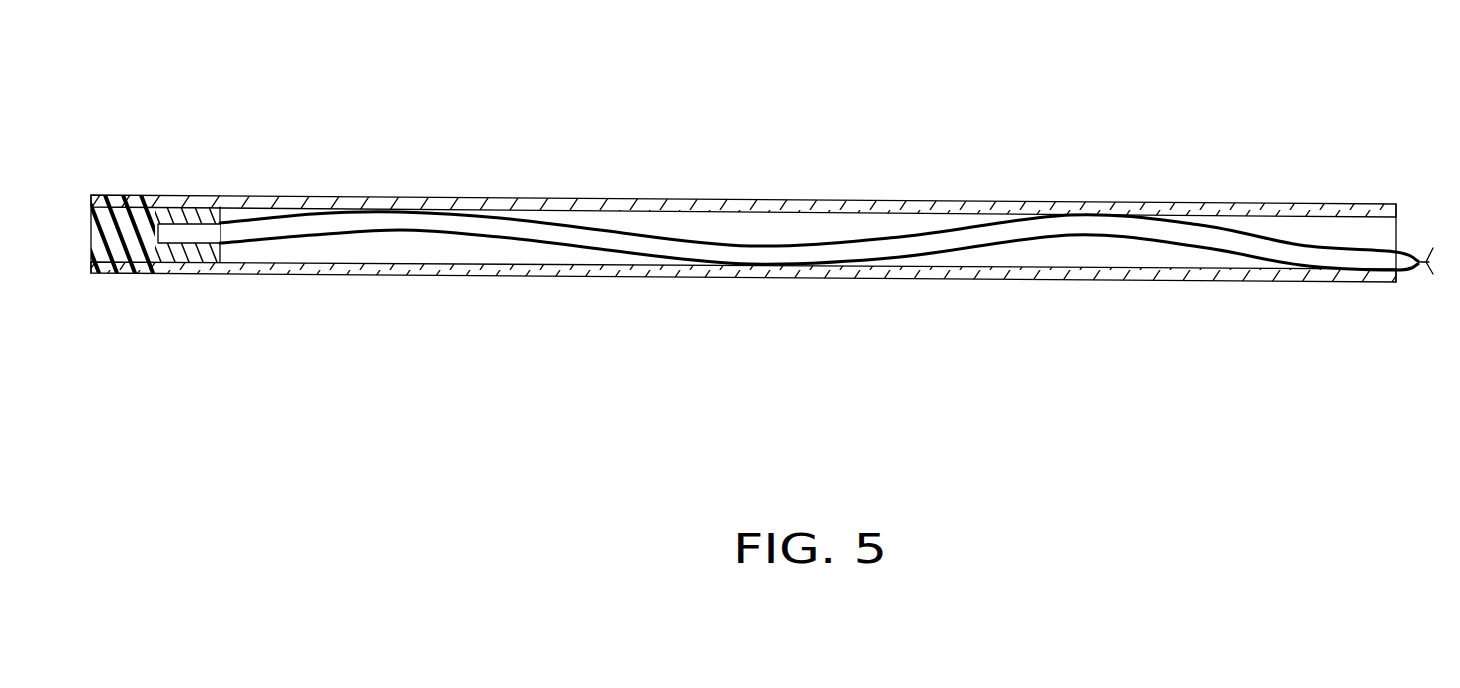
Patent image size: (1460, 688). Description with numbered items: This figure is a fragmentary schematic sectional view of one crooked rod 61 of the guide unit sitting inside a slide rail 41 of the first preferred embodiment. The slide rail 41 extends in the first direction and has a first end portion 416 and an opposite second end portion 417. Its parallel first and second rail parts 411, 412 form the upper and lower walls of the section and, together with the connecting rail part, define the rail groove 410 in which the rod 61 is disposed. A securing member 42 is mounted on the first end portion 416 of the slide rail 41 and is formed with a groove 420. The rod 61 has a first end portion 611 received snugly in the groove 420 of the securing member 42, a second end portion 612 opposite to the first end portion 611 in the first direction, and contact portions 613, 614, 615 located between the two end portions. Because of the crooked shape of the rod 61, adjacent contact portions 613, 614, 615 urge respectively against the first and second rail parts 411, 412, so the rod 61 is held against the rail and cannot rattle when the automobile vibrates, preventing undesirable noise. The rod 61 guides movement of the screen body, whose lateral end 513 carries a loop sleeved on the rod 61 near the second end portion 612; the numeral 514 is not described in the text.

The slide rail 41 is at (743, 214).
The rail groove 410 is at (1103, 244).
The first rail part 411 is at (579, 199).
The second rail part 412 is at (478, 274).
The first end portion 416 is at (247, 201).
The second end portion 417 is at (1357, 204).
The securing member 42 is at (132, 196).
The groove 420 is at (193, 222).
The crooked rod 61 is at (797, 255).
The first end portion 611 is at (179, 240).
The second end portion 612 is at (1363, 263).
The contact portion 613 is at (743, 253).
The contact portion 614 is at (418, 212).
The contact portion 615 is at (1055, 226).
The lateral end 513 is at (1422, 232).
The tube section 514 is at (1243, 242).